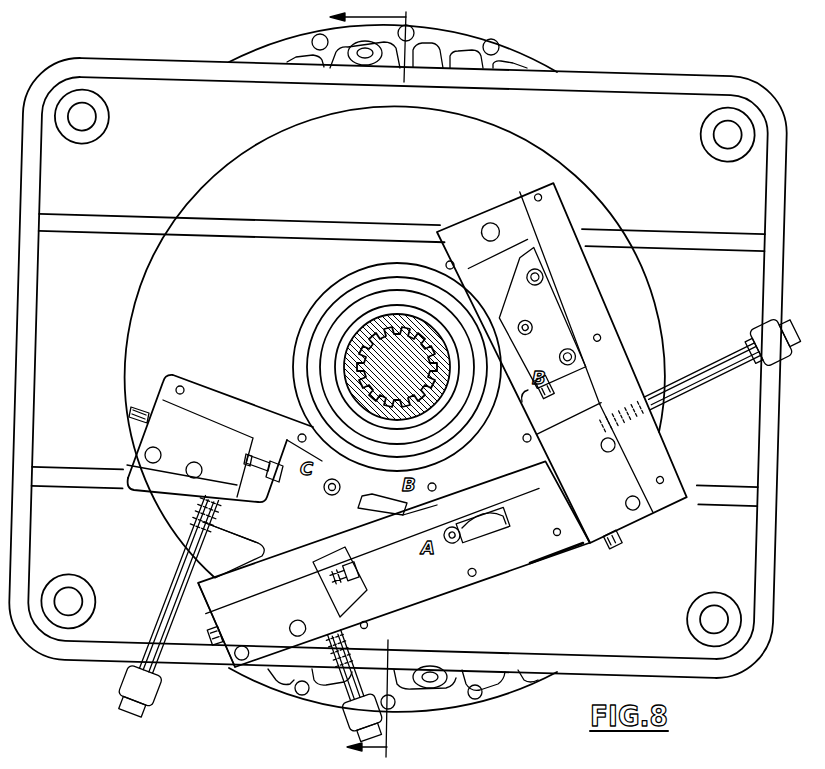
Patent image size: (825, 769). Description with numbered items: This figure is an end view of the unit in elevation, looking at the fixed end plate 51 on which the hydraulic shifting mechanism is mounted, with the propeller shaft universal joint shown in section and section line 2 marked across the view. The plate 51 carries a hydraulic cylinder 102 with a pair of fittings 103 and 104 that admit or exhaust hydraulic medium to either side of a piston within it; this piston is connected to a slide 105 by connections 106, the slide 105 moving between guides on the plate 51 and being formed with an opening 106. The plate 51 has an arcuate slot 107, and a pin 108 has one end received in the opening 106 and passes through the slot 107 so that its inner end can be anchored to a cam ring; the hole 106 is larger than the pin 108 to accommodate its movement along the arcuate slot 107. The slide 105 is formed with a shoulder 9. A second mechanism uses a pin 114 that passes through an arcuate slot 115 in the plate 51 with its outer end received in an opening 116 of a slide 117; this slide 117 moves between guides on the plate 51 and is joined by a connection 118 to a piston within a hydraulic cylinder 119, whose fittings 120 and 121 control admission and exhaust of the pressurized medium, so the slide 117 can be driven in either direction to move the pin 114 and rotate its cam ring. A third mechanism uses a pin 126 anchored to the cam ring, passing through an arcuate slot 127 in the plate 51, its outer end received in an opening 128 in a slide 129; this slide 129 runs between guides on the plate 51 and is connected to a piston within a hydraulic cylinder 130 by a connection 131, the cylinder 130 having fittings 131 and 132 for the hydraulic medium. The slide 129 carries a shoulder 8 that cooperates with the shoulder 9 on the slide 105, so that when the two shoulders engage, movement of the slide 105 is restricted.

The fixed end plate 51 is at (672, 96).
The section line 2- 2 is at (358, 386).
The shoulder 8 is at (382, 496).
The shoulder 9 is at (398, 526).
The hydraulic cylinder 102 is at (236, 672).
The fitting 103 is at (204, 655).
The fitting 104 is at (350, 702).
The slide 105 is at (410, 562).
The opening 106 is at (341, 576).
The arcuate slot 107 is at (507, 518).
The pin 108 is at (478, 518).
The pin 114 is at (528, 328).
The arcuate slot 115 is at (508, 310).
The opening 116 is at (524, 336).
The slide 117 is at (522, 386).
The connection 118 is at (552, 404).
The hydraulic cylinder 119 is at (632, 522).
The fitting 120 is at (613, 549).
The fitting 121 is at (657, 400).
The pin 126 is at (325, 492).
The arcuate slot 127 is at (355, 512).
The opening 128 is at (333, 496).
The slide 129 is at (290, 486).
The hydraulic cylinder 130 is at (140, 444).
The fitting 131 is at (133, 416).
The fitting 132 is at (184, 545).